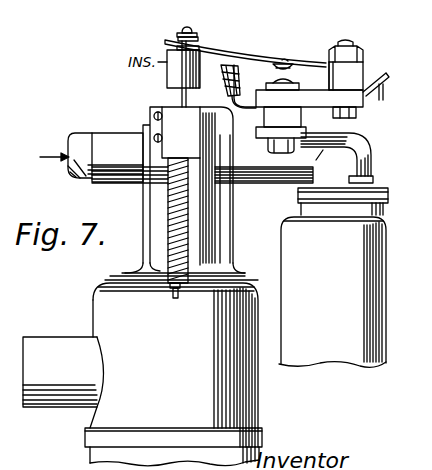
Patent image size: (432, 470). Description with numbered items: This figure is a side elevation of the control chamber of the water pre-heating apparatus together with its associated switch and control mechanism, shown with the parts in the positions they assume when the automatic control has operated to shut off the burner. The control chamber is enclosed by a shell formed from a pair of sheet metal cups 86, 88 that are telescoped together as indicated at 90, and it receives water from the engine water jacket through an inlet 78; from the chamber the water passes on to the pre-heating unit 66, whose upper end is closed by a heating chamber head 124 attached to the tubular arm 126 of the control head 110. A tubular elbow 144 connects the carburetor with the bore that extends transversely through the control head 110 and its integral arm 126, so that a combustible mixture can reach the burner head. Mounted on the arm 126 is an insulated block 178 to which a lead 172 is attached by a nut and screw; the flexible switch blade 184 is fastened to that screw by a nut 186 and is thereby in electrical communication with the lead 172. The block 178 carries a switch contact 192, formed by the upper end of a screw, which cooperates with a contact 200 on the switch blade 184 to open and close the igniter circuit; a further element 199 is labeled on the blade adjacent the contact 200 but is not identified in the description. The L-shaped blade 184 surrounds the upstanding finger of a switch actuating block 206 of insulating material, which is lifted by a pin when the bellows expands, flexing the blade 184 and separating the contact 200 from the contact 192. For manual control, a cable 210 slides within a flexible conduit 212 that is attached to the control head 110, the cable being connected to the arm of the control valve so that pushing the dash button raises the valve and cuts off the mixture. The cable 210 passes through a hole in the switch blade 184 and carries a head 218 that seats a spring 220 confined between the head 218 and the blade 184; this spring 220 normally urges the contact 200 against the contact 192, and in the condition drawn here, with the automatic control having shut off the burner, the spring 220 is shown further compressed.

The pre-heating unit 66 is at (325, 298).
The inlet 78 is at (37, 349).
The sheet metal cup 86 is at (110, 306).
The sheet metal cup 88 is at (261, 457).
The telescoped joint 90 is at (87, 437).
The control head 110 is at (205, 243).
The heating chamber head 124 is at (298, 194).
The tubular arm 126 is at (279, 173).
The tubular elbow 144 is at (82, 150).
The lead 172 is at (381, 88).
The insulated block 178 is at (318, 98).
The flexible switch blade 184 is at (315, 60).
The nut 186 is at (369, 52).
The switch contact 192 is at (291, 80).
The rivet 199 is at (251, 50).
The contact 200 is at (284, 60).
The switch actuating block 206 is at (167, 80).
The cable 210 is at (170, 293).
The flexible conduit 212 is at (185, 215).
The head 218 is at (185, 28).
The spring 220 is at (210, 39).